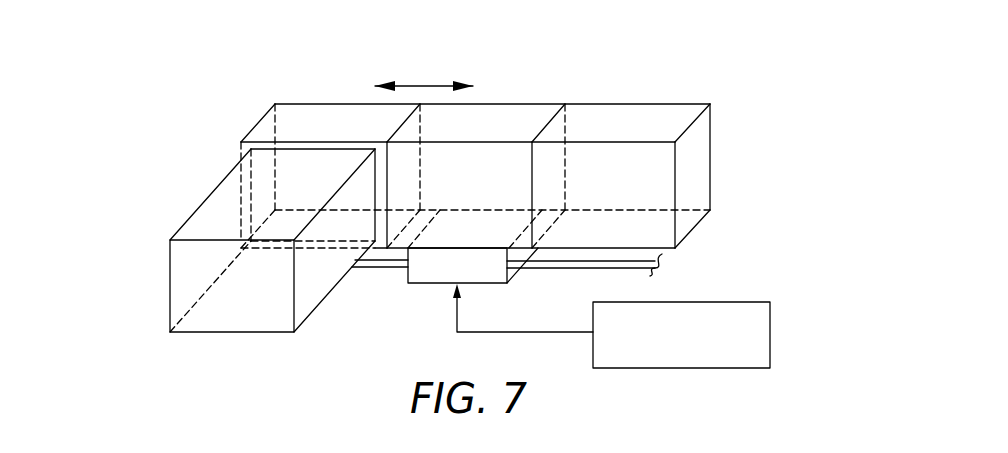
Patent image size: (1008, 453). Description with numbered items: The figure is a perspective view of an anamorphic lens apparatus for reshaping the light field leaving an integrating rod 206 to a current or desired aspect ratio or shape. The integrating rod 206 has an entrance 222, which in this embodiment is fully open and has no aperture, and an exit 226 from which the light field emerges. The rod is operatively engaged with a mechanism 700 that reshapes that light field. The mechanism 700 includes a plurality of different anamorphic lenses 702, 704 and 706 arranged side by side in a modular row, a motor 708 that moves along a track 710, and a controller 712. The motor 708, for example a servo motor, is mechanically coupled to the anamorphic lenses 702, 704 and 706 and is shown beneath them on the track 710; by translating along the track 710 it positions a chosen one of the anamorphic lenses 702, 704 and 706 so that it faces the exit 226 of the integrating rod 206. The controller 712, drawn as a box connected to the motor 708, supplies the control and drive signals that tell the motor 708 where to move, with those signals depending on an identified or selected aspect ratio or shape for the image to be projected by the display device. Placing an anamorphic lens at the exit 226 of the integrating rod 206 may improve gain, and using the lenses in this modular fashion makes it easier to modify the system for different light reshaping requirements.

The mechanism 700 is at (734, 76).
The anamorphic lens 702 is at (343, 115).
The anamorphic lens 704 is at (490, 125).
The anamorphic lens 706 is at (632, 122).
The motor 708 is at (428, 272).
The track 710 is at (565, 270).
The controller 712 is at (750, 300).
The integrating rod 206 is at (170, 216).
The entrance 222 is at (192, 280).
The exit 226 is at (303, 132).